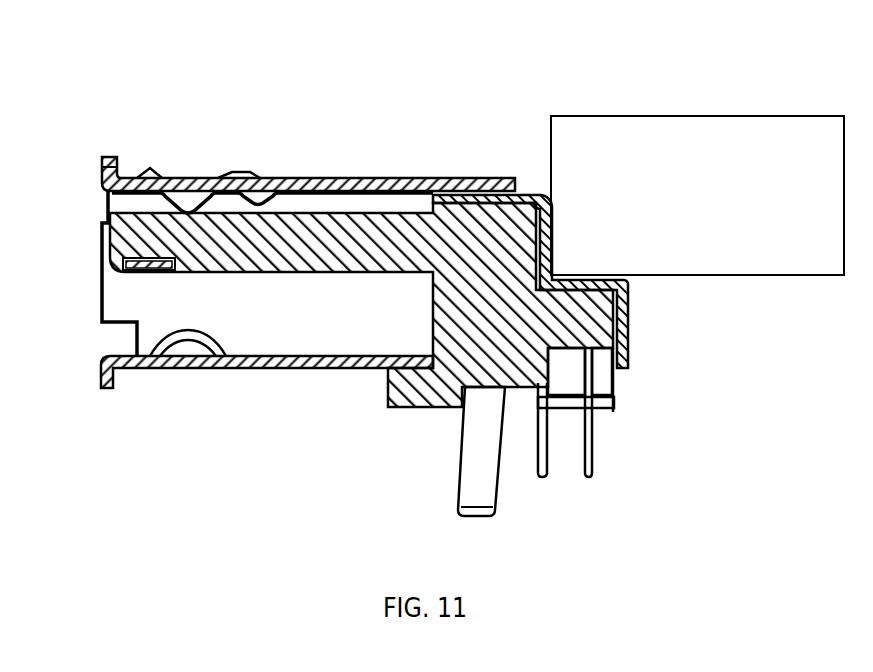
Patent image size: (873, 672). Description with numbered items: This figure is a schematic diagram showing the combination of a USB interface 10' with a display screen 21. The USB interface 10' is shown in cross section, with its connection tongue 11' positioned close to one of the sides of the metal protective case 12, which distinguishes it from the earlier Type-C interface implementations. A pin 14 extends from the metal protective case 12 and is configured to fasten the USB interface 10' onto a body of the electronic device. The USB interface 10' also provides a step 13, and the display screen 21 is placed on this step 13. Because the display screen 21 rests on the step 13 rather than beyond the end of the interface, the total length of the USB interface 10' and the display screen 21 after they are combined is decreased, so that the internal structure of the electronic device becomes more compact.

The USB interface 10' is at (325, 291).
The connection tongue 11' is at (317, 255).
The metal protective case 12 is at (377, 177).
The step 13 is at (697, 147).
The pin 14 is at (488, 473).
The display screen 21 is at (669, 181).